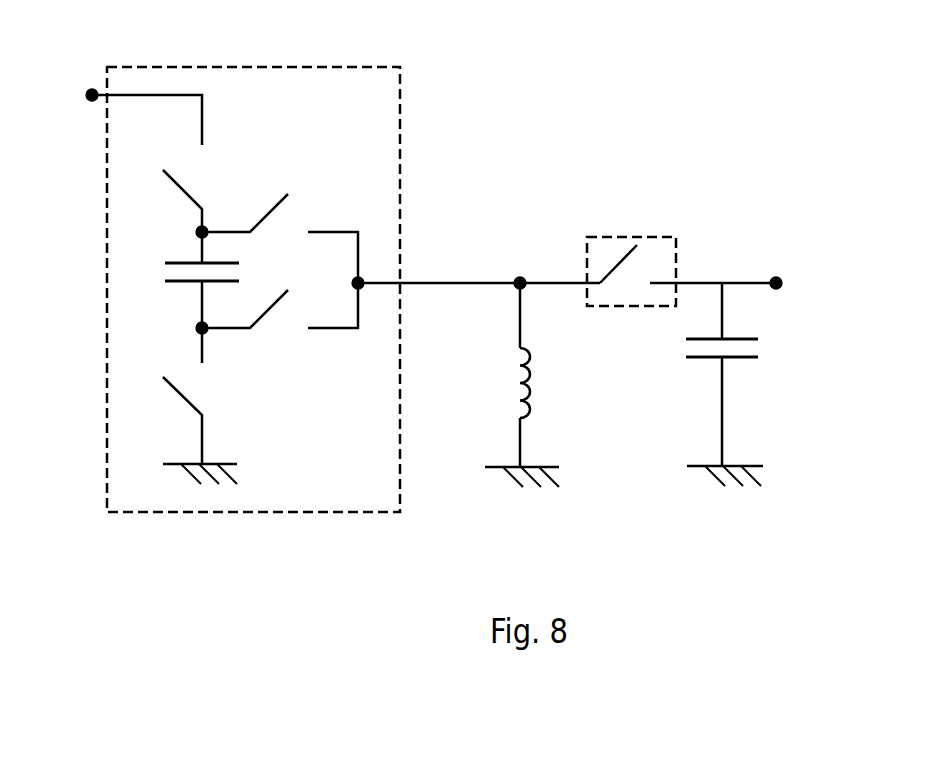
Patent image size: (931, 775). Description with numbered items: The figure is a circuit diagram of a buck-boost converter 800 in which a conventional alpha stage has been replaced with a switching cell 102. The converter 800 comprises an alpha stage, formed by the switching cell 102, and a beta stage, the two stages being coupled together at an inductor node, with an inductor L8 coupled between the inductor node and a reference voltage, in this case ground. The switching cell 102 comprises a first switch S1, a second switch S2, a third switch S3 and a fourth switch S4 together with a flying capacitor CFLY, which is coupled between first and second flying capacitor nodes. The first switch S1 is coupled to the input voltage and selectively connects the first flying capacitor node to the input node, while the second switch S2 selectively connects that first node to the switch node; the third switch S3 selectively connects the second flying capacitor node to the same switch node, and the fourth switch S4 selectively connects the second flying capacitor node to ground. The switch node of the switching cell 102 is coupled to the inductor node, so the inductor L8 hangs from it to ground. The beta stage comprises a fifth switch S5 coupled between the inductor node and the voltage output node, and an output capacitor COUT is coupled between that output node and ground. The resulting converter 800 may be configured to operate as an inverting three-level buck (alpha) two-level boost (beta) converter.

The buck-boost converter 800 is at (731, 137).
The switching cell 102 is at (385, 107).
The first switch S1 is at (206, 201).
The second switch S2 is at (248, 228).
The third switch S3 is at (248, 325).
The fourth switch S4 is at (205, 396).
The fifth switch S5 is at (681, 271).
The flying capacitor CFLY is at (186, 280).
The inductor L8 is at (550, 375).
The output capacitor COUT is at (741, 374).